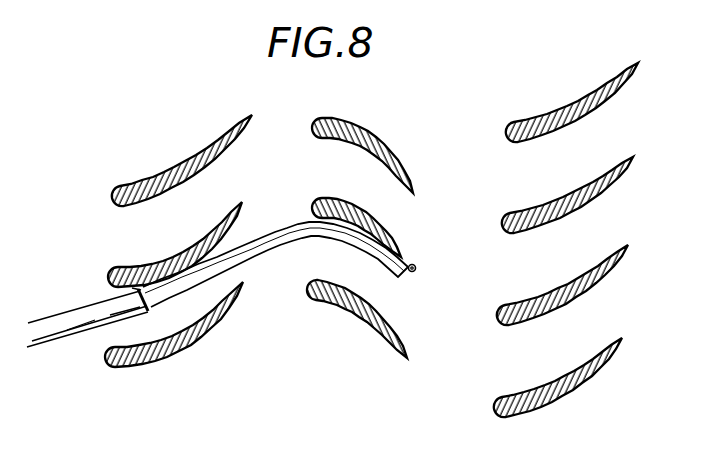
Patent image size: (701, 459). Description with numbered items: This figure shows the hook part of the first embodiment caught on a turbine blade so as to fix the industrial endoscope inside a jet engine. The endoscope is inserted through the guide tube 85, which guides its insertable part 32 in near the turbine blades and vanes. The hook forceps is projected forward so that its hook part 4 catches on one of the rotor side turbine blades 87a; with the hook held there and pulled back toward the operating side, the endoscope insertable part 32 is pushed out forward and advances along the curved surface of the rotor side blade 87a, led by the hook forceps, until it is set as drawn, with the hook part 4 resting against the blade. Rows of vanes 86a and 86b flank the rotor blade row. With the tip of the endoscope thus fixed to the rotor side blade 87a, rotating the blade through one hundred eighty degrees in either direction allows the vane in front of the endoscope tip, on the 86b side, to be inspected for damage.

The guide tube 85 is at (82, 312).
The insertable part 32 is at (276, 240).
The hook part 4 is at (418, 269).
The rotor side turbine blade 87a is at (377, 228).
The vane 86a is at (126, 368).
The vane 86b is at (518, 415).